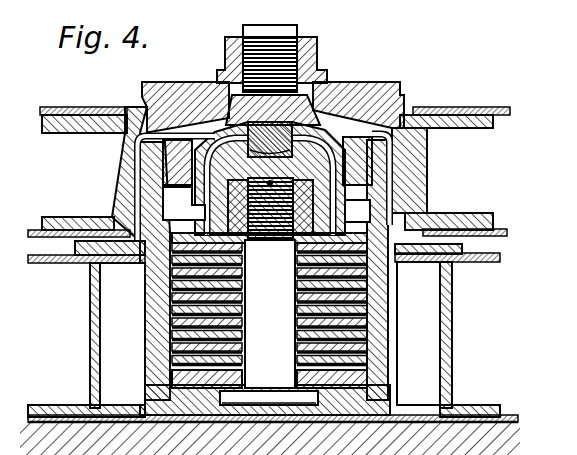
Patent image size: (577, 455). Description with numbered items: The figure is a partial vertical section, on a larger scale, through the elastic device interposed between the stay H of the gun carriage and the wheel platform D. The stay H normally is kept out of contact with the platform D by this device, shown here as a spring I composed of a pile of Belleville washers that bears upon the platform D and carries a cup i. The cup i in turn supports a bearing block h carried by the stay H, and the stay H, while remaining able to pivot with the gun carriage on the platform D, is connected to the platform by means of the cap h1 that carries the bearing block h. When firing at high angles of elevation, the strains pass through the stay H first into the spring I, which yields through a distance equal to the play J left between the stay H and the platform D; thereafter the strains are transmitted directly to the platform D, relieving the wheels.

The cup i is at (221, 124).
The bearing block h is at (318, 85).
The cap h1 is at (352, 84).
The stay H is at (458, 108).
The spring I is at (168, 305).
The wheel platform D is at (448, 348).
The play J is at (87, 268).